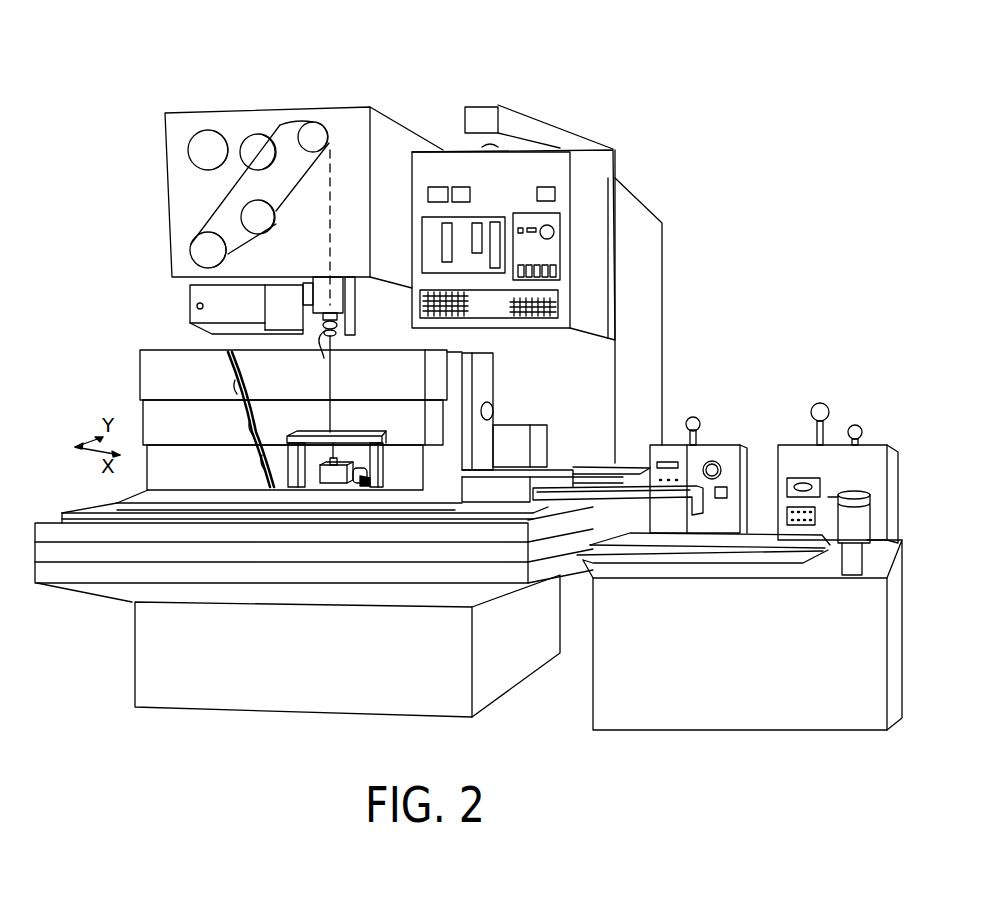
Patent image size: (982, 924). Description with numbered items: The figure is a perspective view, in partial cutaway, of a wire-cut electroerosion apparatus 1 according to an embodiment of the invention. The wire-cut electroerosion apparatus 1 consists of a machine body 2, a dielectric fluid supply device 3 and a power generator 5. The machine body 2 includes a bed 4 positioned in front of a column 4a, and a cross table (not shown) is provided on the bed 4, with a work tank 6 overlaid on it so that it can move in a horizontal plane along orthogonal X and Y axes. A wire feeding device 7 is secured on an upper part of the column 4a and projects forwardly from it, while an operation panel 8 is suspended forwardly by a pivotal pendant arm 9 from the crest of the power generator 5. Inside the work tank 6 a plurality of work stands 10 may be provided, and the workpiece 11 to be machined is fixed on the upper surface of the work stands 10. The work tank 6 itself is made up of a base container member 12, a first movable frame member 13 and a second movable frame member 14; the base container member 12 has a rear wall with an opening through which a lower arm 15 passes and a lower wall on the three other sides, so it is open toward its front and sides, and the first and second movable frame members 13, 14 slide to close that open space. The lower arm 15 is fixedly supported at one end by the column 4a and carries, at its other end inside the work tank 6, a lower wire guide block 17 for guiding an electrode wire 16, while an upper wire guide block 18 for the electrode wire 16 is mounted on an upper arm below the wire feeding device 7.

The wire-cut electroerosion apparatus 1 is at (372, 42).
The machine body 2 is at (427, 108).
The dielectric fluid supply device 3 is at (757, 466).
The bed 4 is at (150, 659).
The column 4a is at (267, 340).
The power generator 5 is at (658, 222).
The work tank 6 is at (275, 411).
The wire feeding device 7 is at (192, 119).
The operation panel 8 is at (562, 160).
The pivotal pendant arm 9 is at (535, 98).
The work stand 10 is at (276, 451).
The workpiece 11 is at (330, 428).
The base container member 12 is at (221, 470).
The first movable frame member 13 is at (219, 428).
The second movable frame member 14 is at (216, 375).
The lower arm 15 is at (363, 458).
The electrode wire 16 is at (296, 121).
The lower wire guide block 17 is at (372, 484).
The upper wire guide block 18 is at (325, 346).